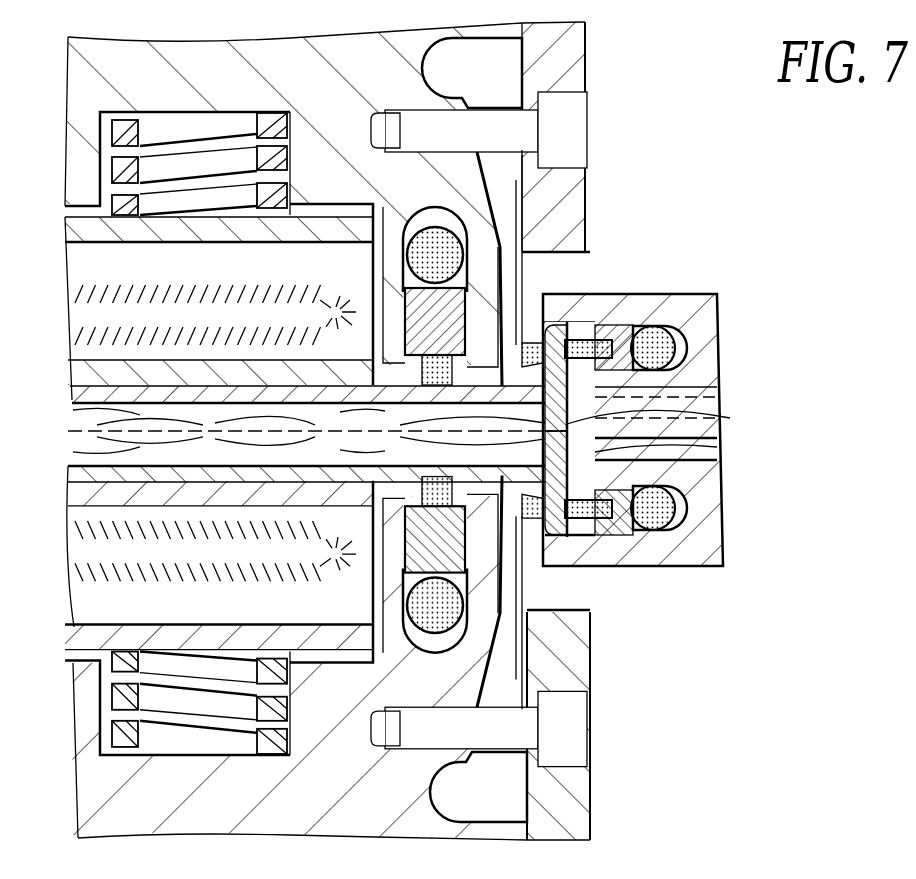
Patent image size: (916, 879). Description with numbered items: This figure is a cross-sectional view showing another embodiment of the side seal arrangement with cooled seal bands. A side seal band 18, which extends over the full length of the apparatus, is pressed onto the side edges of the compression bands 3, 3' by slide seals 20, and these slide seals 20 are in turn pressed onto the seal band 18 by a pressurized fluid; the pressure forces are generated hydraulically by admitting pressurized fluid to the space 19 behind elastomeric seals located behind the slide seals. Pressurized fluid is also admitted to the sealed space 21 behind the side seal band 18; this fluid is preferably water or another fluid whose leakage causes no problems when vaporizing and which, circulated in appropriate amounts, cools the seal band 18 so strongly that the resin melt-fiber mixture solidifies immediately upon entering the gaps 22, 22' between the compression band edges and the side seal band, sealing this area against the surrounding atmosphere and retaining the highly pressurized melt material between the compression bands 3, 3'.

The compression band 3 is at (551, 345).
The compression band 3' is at (562, 518).
The side seal band 18 is at (700, 413).
The space 19 is at (687, 348).
The slide seal 20 is at (603, 343).
The sealed space 21 is at (724, 444).
The gap 22 is at (658, 430).
The gap 22' is at (689, 497).